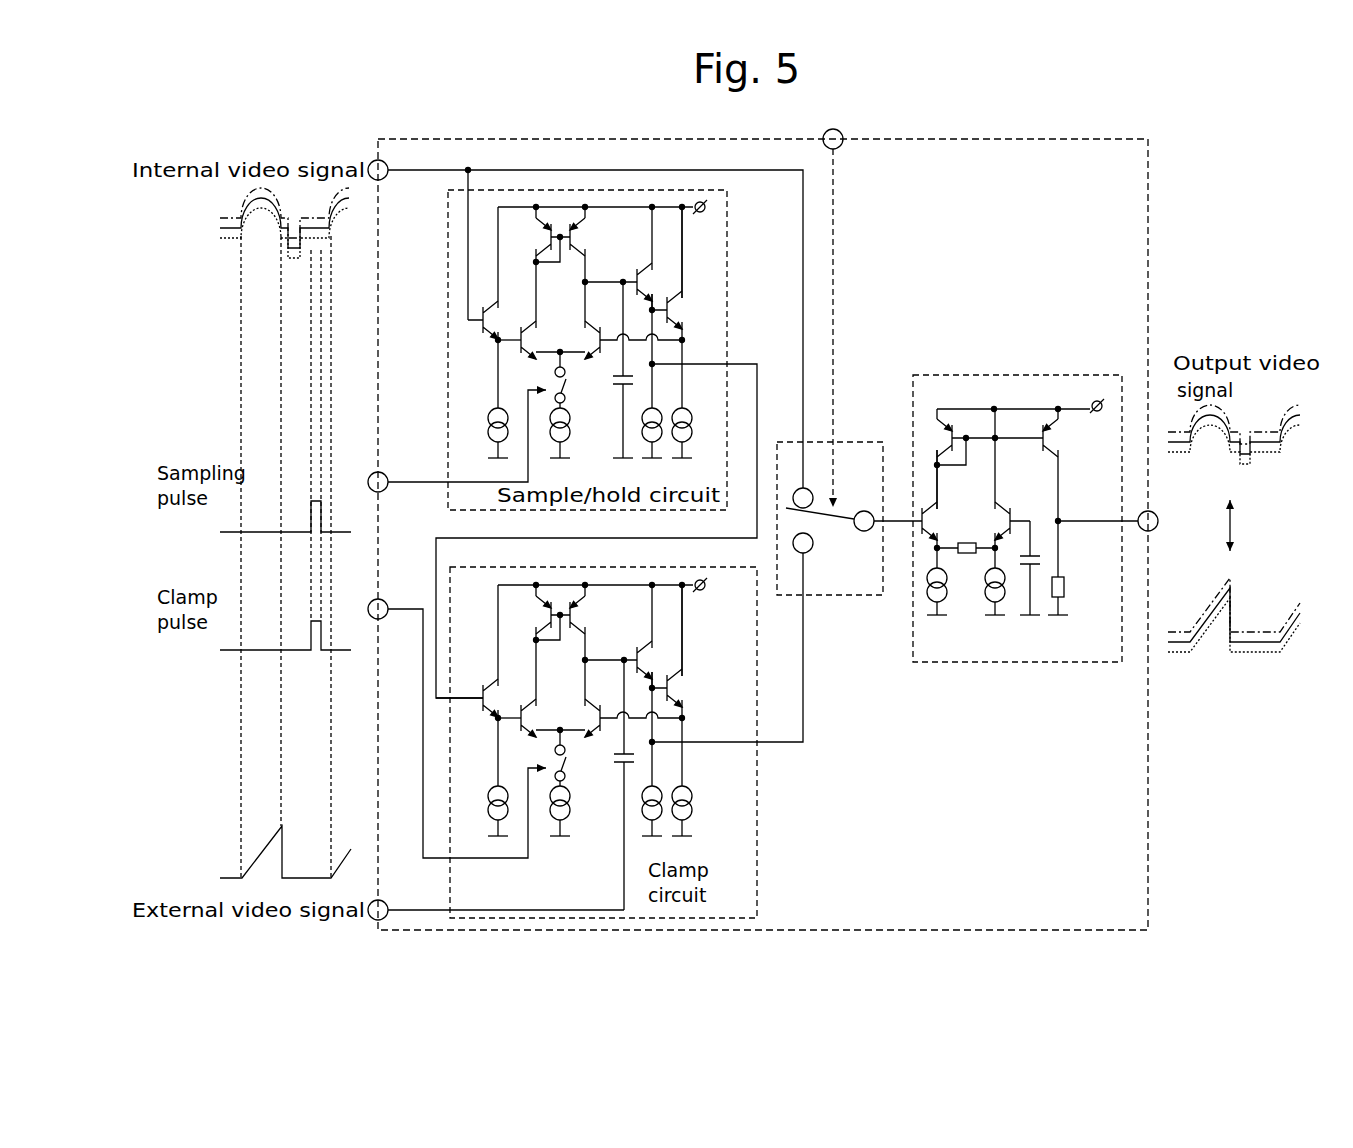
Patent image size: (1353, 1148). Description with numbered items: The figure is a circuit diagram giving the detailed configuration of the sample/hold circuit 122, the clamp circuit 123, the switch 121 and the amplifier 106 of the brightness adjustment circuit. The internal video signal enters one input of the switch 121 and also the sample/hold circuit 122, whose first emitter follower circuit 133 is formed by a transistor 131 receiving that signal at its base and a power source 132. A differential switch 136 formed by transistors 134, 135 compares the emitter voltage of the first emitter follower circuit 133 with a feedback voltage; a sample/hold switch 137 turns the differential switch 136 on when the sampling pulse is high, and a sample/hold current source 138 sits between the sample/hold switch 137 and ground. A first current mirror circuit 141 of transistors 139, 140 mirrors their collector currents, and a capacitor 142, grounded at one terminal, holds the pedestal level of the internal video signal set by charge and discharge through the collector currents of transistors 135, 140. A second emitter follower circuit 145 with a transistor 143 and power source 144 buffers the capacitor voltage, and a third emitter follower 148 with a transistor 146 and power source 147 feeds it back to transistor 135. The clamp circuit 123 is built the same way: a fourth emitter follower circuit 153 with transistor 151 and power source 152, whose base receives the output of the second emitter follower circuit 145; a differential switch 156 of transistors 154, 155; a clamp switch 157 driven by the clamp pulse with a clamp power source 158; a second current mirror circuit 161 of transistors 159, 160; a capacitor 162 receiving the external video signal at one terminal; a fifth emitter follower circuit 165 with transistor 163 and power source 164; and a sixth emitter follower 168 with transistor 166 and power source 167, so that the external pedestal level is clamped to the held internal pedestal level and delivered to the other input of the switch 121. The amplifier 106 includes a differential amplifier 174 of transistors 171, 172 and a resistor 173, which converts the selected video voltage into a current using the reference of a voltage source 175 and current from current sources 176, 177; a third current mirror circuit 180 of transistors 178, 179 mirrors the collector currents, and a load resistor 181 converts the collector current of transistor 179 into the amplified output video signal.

The amplifier 106 is at (1017, 498).
The switch 121 is at (842, 500).
The sample/hold circuit 122 is at (616, 350).
The clamp circuit 123 is at (625, 742).
The transistor 131 is at (476, 288).
The power source 132 is at (480, 435).
The first emitter follower circuit 133 is at (459, 382).
The transistor 134 is at (542, 326).
The transistor 135 is at (612, 340).
The differential switch 136 is at (566, 288).
The sample/hold switch 137 is at (584, 383).
The sample/hold current source 138 is at (586, 435).
The transistor 139 is at (524, 236).
The transistor 140 is at (597, 231).
The first current mirror circuit 141 is at (563, 185).
The capacitor 142 is at (602, 370).
The transistor 143 is at (620, 307).
The power source 144 is at (684, 418).
The second emitter follower circuit 145 is at (665, 272).
The transistor 146 is at (691, 307).
The power source 147 is at (701, 433).
The third emitter follower 148 is at (702, 252).
The transistor 151 is at (468, 685).
The power source 152 is at (480, 826).
The fourth emitter follower circuit 153 is at (450, 763).
The transistor 154 is at (542, 703).
The transistor 155 is at (612, 718).
The differential switch 156 is at (566, 666).
The clamp switch 157 is at (584, 767).
The clamp power source 158 is at (582, 826).
The transistor 159 is at (524, 614).
The transistor 160 is at (597, 609).
The second current mirror circuit 161 is at (575, 591).
The capacitor 162 is at (603, 785).
The transistor 163 is at (620, 685).
The power source 164 is at (684, 797).
The fifth emitter follower circuit 165 is at (665, 650).
The transistor 166 is at (689, 685).
The power source 167 is at (701, 811).
The sixth emitter follower 168 is at (702, 630).
The transistor 171 is at (954, 509).
The transistor 172 is at (1017, 518).
The resistor 173 is at (966, 563).
The differential amplifier 174 is at (972, 460).
The voltage source 175 is at (1038, 555).
The current source 176 is at (907, 597).
The current source 177 is at (980, 609).
The transistor 178 is at (909, 459).
The transistor 179 is at (1076, 493).
The third current mirror circuit 180 is at (990, 400).
The load resistor 181 is at (1080, 591).